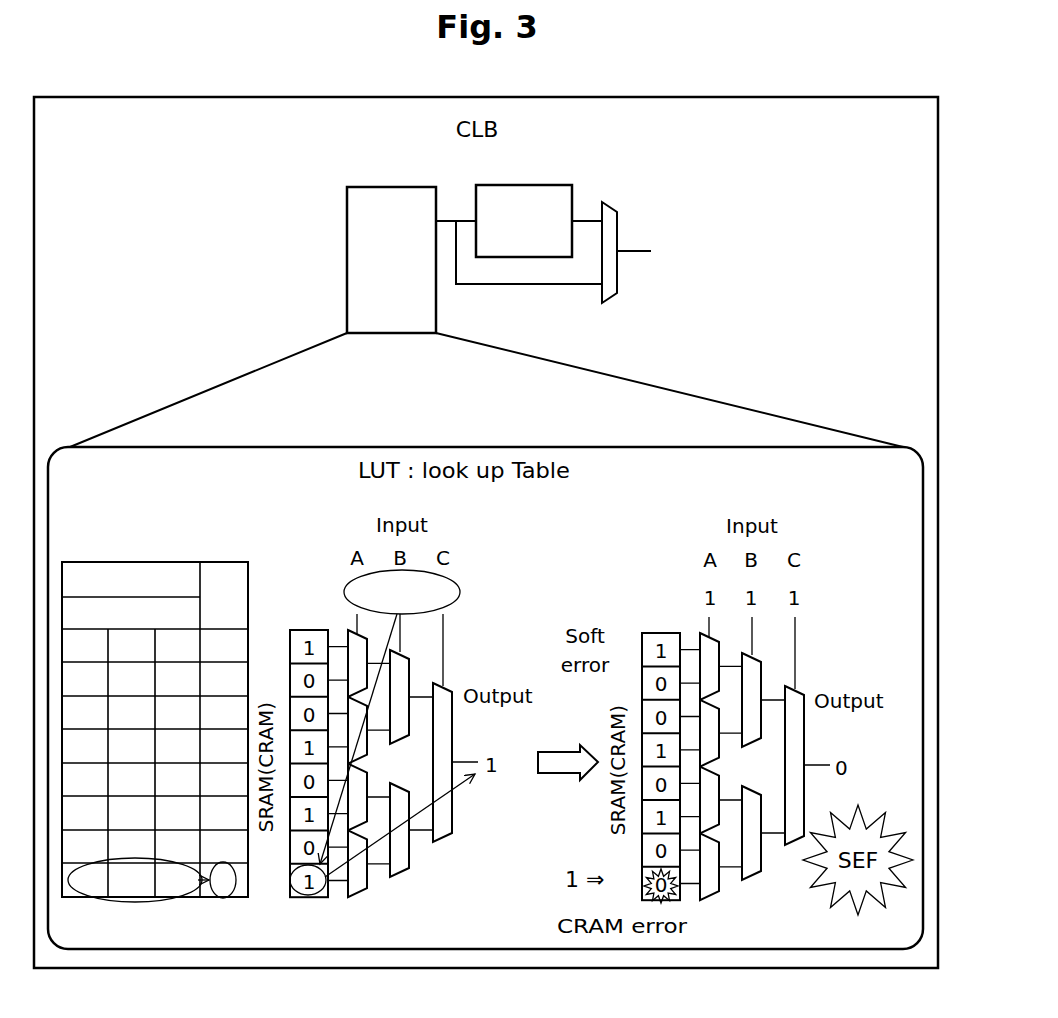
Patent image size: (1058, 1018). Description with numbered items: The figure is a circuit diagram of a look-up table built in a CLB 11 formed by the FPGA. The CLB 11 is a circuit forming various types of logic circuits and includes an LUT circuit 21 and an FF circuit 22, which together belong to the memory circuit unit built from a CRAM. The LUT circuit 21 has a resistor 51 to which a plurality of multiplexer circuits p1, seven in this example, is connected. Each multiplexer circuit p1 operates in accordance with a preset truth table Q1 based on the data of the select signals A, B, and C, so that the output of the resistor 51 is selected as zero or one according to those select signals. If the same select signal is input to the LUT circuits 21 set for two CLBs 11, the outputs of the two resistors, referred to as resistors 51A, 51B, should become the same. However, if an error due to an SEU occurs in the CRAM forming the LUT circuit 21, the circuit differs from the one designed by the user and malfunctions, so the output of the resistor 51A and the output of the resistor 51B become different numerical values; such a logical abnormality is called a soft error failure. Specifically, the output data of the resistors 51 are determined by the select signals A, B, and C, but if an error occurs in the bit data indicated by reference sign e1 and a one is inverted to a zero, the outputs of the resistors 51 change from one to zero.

The CLB 11 is at (741, 97).
The LUT circuit 21 is at (372, 187).
The FF circuit 22 is at (540, 185).
The resistor 51 is at (507, 558).
The resistor 51A is at (400, 595).
The resistor 51B is at (736, 758).
The truth table Q1 is at (152, 551).
The multiplexer circuit p1 is at (360, 893).
The bit data e1 is at (560, 777).